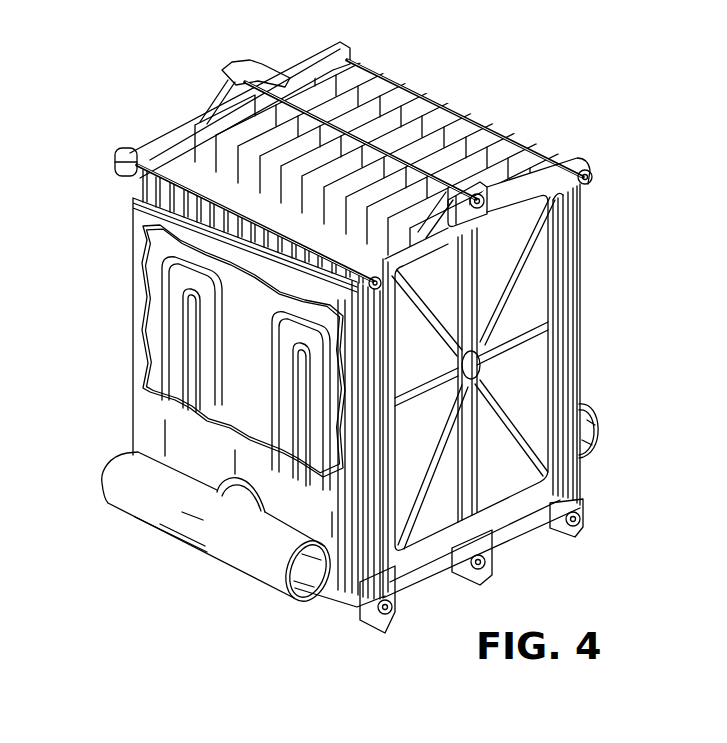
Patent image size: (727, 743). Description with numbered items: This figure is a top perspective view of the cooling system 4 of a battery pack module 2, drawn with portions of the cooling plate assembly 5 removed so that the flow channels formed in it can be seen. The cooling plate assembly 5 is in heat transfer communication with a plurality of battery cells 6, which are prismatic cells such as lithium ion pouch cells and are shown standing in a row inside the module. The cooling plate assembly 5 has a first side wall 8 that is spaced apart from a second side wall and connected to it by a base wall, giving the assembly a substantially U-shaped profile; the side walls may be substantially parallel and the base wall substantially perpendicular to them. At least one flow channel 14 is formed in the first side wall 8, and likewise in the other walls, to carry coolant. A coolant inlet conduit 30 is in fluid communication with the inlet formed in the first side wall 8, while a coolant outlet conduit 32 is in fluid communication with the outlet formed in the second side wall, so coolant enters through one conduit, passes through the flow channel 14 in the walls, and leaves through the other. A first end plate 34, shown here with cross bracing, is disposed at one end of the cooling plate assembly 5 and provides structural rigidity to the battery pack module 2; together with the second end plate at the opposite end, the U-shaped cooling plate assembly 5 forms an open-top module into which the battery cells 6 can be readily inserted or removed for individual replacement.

The battery pack module 2 is at (524, 74).
The cooling system 4 is at (126, 332).
The cooling plate assembly 5 is at (306, 506).
The battery cells 6 is at (405, 100).
The first side wall 8 is at (132, 271).
The flow channel 14 is at (215, 388).
The coolant inlet conduit 30 is at (235, 544).
The coolant outlet conduit 32 is at (597, 406).
The first end plate 34 is at (538, 292).